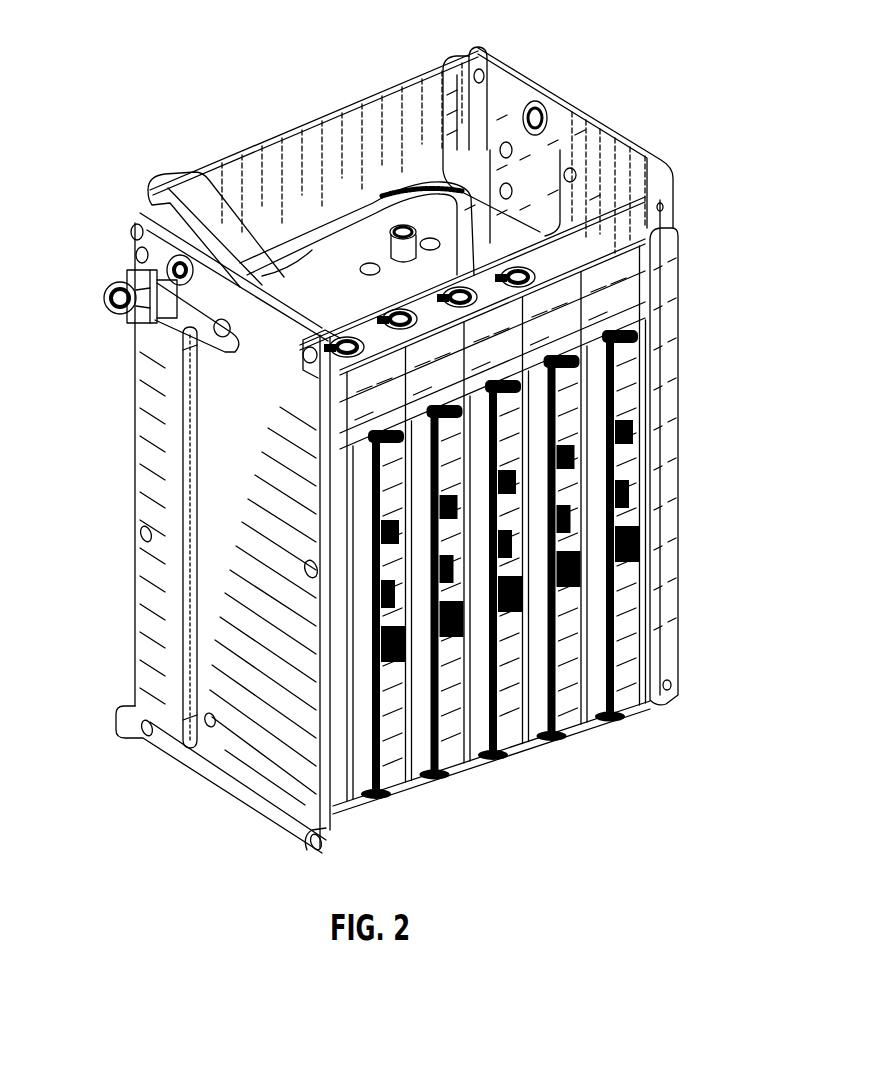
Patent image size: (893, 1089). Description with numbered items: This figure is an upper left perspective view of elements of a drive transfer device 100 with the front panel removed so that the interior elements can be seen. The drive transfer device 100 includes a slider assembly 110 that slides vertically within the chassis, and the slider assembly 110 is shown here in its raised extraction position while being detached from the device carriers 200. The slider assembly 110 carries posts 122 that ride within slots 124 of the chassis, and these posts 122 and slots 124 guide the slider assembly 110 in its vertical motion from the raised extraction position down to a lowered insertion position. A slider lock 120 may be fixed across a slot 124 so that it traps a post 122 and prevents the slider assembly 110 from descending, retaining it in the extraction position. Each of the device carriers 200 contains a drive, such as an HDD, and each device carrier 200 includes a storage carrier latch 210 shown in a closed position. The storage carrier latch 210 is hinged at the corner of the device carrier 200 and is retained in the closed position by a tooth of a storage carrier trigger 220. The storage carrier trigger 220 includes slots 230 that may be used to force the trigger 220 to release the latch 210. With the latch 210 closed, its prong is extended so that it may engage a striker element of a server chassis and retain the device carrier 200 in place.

The drive transfer device 100 is at (208, 72).
The slider assembly 110 is at (350, 207).
The slider lock 120 is at (128, 276).
The post 122 is at (535, 108).
The slot 124 is at (186, 386).
The device carrier 200 is at (513, 733).
The storage carrier latch 210 is at (580, 313).
The storage carrier trigger 220 is at (477, 292).
The slot 230 is at (352, 352).